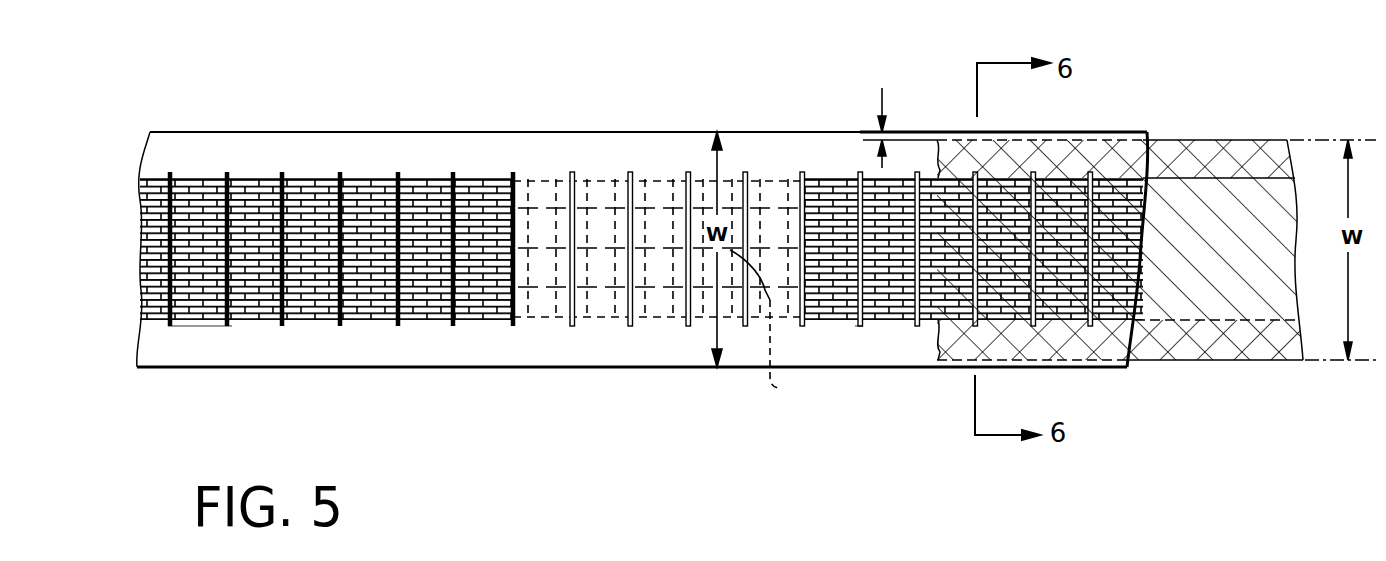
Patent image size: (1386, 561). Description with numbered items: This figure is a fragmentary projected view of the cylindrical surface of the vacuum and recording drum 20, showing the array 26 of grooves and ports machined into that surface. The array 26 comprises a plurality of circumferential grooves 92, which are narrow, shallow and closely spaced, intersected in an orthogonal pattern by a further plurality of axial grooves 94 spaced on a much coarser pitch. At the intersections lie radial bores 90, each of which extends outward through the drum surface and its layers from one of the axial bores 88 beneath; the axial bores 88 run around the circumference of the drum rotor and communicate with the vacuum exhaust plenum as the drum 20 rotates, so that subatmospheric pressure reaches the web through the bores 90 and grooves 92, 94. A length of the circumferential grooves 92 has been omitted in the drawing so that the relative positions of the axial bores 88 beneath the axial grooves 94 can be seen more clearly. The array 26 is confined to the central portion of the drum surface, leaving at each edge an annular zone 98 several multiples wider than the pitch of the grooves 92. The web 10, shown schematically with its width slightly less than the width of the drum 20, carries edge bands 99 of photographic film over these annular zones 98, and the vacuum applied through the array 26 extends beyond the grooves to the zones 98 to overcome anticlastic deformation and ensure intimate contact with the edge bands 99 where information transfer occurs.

The web 10 is at (1225, 140).
The vacuum and recording drum 20 is at (430, 132).
The array 26 is at (772, 121).
The axial bores 88 is at (769, 335).
The radial bores 90 is at (574, 178).
The circumferential grooves 92 is at (260, 180).
The axial grooves 94 is at (227, 320).
The annular zone 98 is at (360, 150).
The edge bands 99 is at (1183, 350).